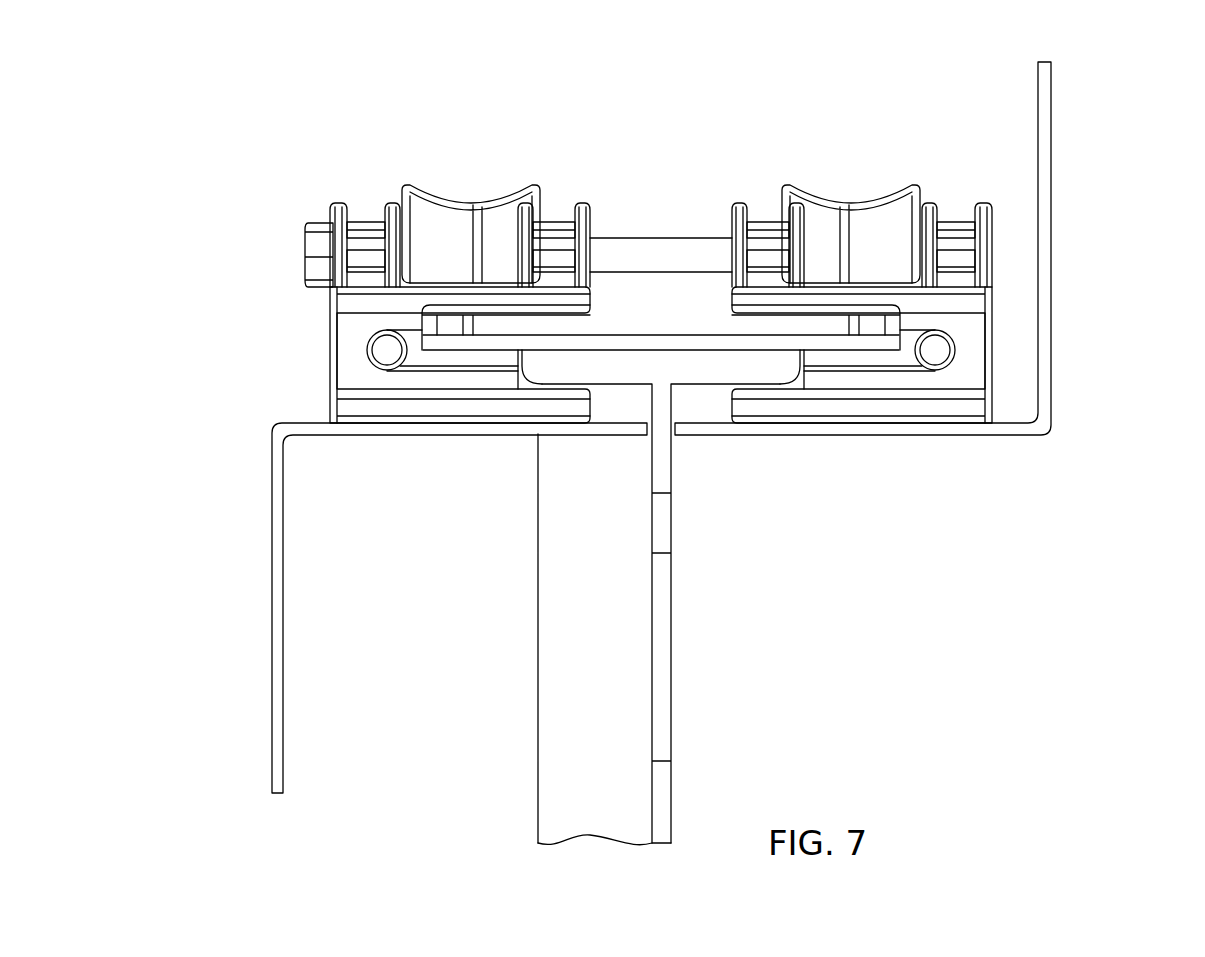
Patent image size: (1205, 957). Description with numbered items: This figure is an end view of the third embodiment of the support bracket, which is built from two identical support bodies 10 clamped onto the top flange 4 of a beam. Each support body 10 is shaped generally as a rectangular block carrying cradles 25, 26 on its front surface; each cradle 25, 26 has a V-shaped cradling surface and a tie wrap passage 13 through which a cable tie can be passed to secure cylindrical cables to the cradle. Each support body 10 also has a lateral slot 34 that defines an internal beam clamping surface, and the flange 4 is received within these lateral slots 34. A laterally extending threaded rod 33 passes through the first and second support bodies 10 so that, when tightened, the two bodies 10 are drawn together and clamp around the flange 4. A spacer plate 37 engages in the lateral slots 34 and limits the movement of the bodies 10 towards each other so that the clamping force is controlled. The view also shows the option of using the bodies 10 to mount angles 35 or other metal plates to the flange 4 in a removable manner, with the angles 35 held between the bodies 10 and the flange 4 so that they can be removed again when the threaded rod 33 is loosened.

The top flange 4 is at (637, 367).
The support body 10 is at (328, 323).
The tie wrap passage 13 is at (363, 263).
The cradle 25 is at (368, 227).
The cradle 26 is at (468, 203).
The lateral threaded rod 33 is at (645, 242).
The lateral slot 34 is at (495, 325).
The angle 35 is at (278, 519).
The spacer plate 37 is at (828, 340).